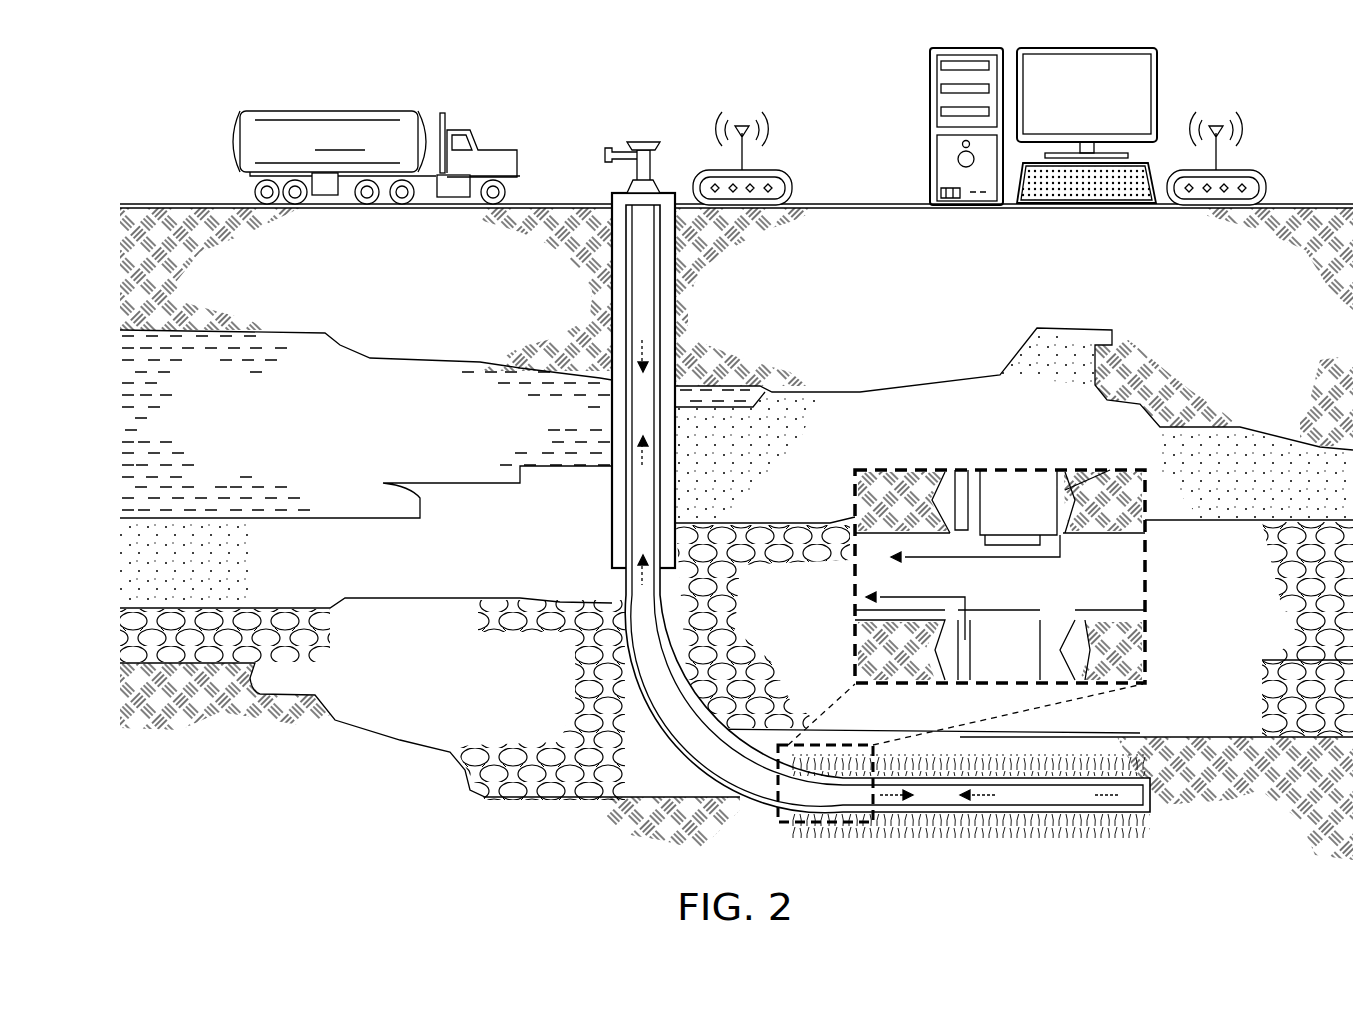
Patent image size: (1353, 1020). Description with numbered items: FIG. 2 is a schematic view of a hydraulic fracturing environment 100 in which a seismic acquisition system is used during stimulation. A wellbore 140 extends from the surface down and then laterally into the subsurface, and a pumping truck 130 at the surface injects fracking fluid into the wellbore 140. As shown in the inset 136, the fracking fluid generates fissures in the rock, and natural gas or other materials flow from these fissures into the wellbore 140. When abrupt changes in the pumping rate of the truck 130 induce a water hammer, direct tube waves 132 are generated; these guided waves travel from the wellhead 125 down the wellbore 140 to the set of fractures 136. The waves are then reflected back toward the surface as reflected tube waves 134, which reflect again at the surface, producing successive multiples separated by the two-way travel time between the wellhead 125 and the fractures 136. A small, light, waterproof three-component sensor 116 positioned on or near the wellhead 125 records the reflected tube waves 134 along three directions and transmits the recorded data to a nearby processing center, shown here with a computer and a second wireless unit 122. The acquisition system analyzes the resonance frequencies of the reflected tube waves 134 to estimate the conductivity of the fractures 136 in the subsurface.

The environment 100 is at (503, 60).
The sensor 116 is at (795, 190).
The wireless transceiver at control site 122 is at (1266, 190).
The wellhead 125 is at (638, 130).
The pumping truck 130 is at (332, 110).
The direct tube waves 132 is at (612, 327).
The reflected tube waves 134 is at (612, 510).
The fractures 136 is at (1148, 586).
The wellbore 140 is at (622, 708).